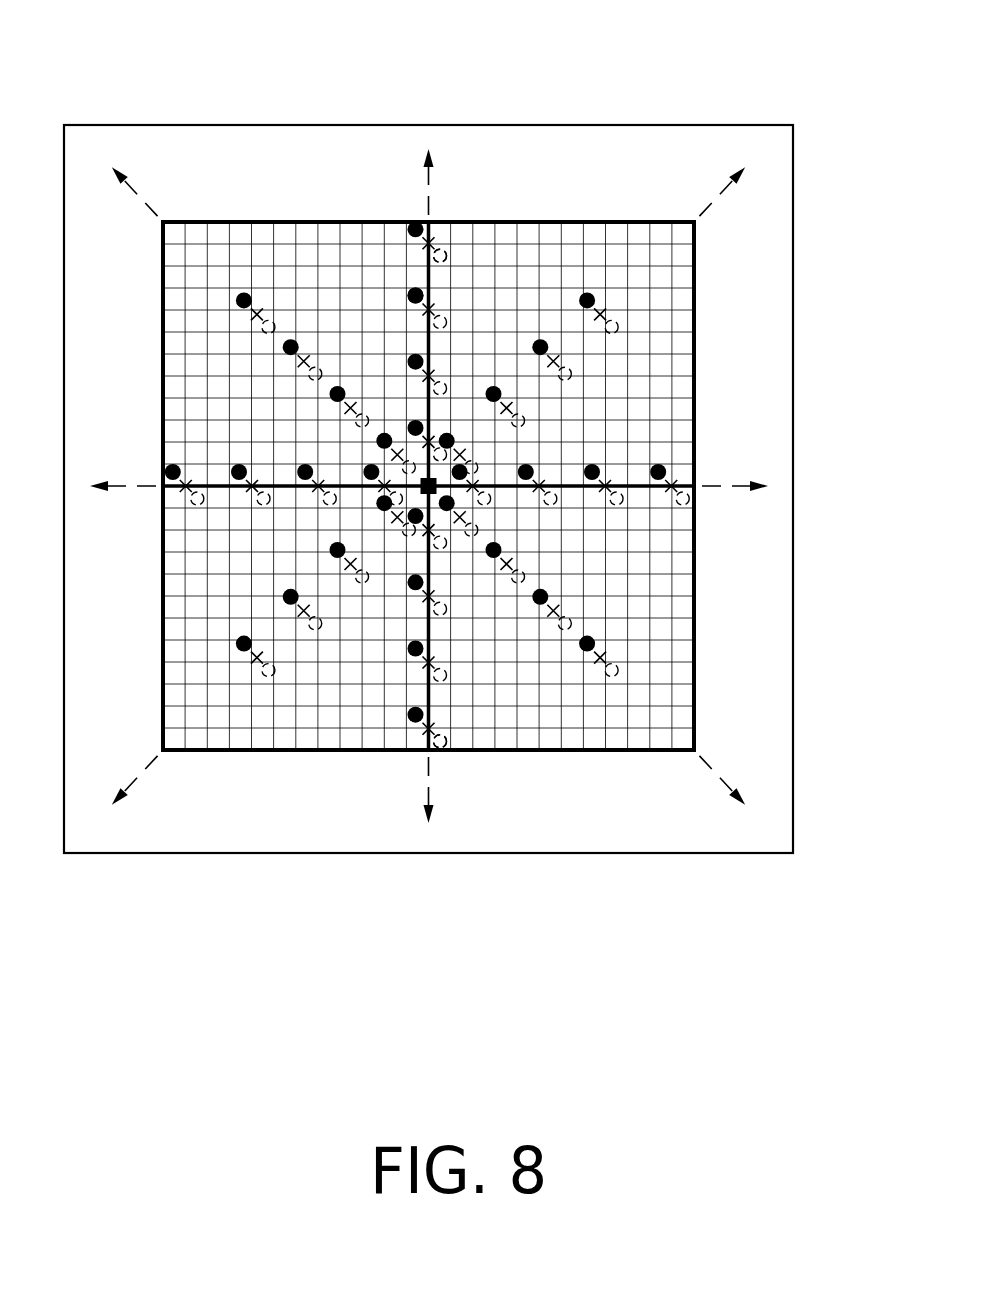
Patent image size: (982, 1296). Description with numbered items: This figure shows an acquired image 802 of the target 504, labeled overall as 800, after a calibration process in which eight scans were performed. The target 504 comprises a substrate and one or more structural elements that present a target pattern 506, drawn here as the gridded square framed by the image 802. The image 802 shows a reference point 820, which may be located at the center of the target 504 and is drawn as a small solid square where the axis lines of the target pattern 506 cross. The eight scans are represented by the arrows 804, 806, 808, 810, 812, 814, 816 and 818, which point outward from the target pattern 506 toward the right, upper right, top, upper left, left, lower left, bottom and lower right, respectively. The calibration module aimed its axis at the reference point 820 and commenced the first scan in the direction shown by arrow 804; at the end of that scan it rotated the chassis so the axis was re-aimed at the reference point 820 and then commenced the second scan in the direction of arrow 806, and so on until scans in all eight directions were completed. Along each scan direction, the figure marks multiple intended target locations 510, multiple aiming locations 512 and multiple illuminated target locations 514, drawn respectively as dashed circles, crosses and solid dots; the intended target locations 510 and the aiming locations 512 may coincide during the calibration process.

The target 504 is at (693, 125).
The target pattern 506 is at (668, 238).
The intended target location 510 is at (441, 247).
The aiming location 512 is at (441, 748).
The illuminated target location 514 is at (412, 289).
The spot pattern diagram 800 is at (150, 53).
The image 802 is at (753, 125).
The arrow 804 is at (717, 486).
The arrow 806 is at (712, 203).
The arrow 808 is at (425, 177).
The arrow 810 is at (151, 205).
The arrow 812 is at (147, 486).
The arrow 814 is at (145, 770).
The arrow 816 is at (428, 777).
The arrow 818 is at (715, 770).
The reference point 820 is at (428, 486).